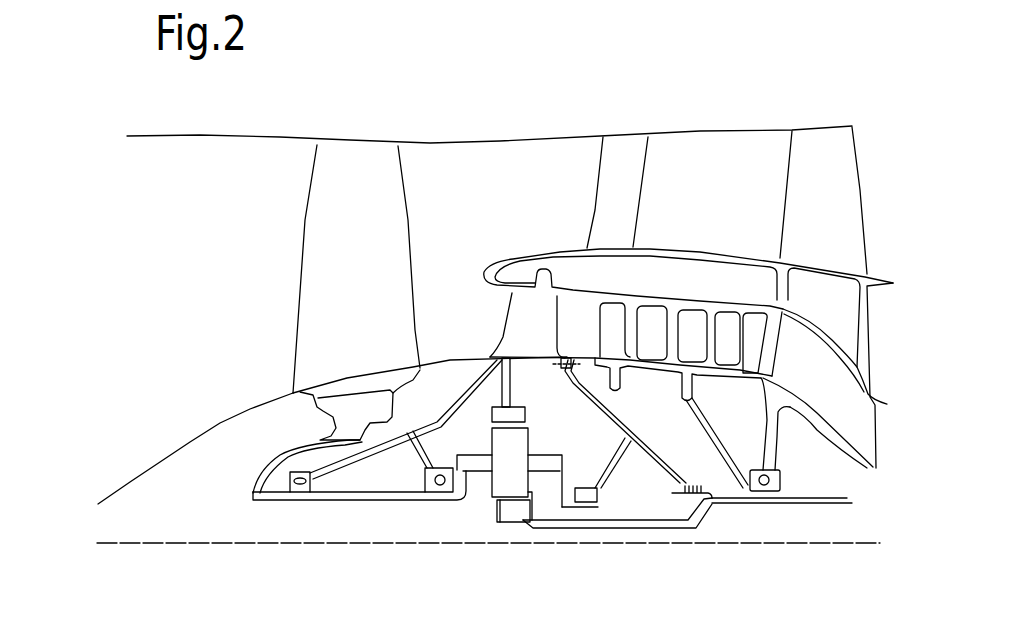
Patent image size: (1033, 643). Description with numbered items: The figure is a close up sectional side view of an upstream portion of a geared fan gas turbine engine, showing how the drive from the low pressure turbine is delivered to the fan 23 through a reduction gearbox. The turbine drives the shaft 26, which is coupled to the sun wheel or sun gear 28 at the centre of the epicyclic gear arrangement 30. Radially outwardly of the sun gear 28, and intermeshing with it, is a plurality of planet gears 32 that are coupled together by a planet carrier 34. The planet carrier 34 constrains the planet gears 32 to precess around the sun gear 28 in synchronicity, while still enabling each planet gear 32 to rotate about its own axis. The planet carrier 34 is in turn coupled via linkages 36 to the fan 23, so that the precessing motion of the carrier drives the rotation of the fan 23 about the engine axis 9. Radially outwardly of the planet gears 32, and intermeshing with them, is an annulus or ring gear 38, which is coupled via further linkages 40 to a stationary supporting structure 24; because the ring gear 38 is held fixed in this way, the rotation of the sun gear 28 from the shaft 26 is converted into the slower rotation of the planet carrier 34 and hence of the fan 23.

The engine axis 9 is at (256, 546).
The fan 23 is at (326, 303).
The stationary supporting structure 24 is at (522, 322).
The shaft 26 is at (752, 503).
The sun gear 28 is at (508, 515).
The epicyclic gear arrangement 30 is at (463, 502).
The planet gears 32 is at (500, 482).
The planet carrier 34 is at (552, 488).
The linkages 36 is at (465, 500).
The ring gear 38 is at (497, 418).
The linkages 40 is at (513, 380).